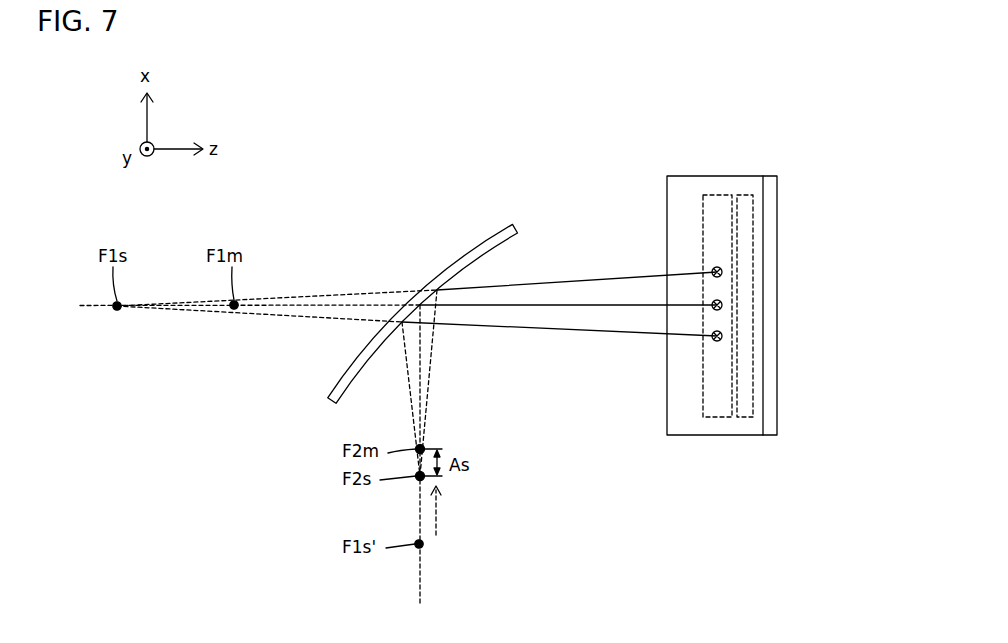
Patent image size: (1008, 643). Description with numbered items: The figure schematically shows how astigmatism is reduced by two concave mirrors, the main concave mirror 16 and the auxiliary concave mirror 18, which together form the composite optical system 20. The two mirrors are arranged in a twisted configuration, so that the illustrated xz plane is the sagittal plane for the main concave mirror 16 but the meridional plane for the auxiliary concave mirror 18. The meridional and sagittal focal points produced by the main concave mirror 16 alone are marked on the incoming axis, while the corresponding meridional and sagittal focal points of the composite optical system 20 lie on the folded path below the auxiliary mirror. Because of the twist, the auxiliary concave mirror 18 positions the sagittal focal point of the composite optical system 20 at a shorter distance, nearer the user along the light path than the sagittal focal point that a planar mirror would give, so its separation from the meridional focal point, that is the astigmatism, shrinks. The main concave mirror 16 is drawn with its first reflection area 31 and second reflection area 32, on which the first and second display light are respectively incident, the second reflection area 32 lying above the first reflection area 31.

The main concave mirror 16 is at (722, 313).
The auxiliary concave mirror 18 is at (351, 368).
The composite optical system 20 is at (775, 313).
The first reflection area 31 is at (717, 195).
The second reflection area 32 is at (743, 195).